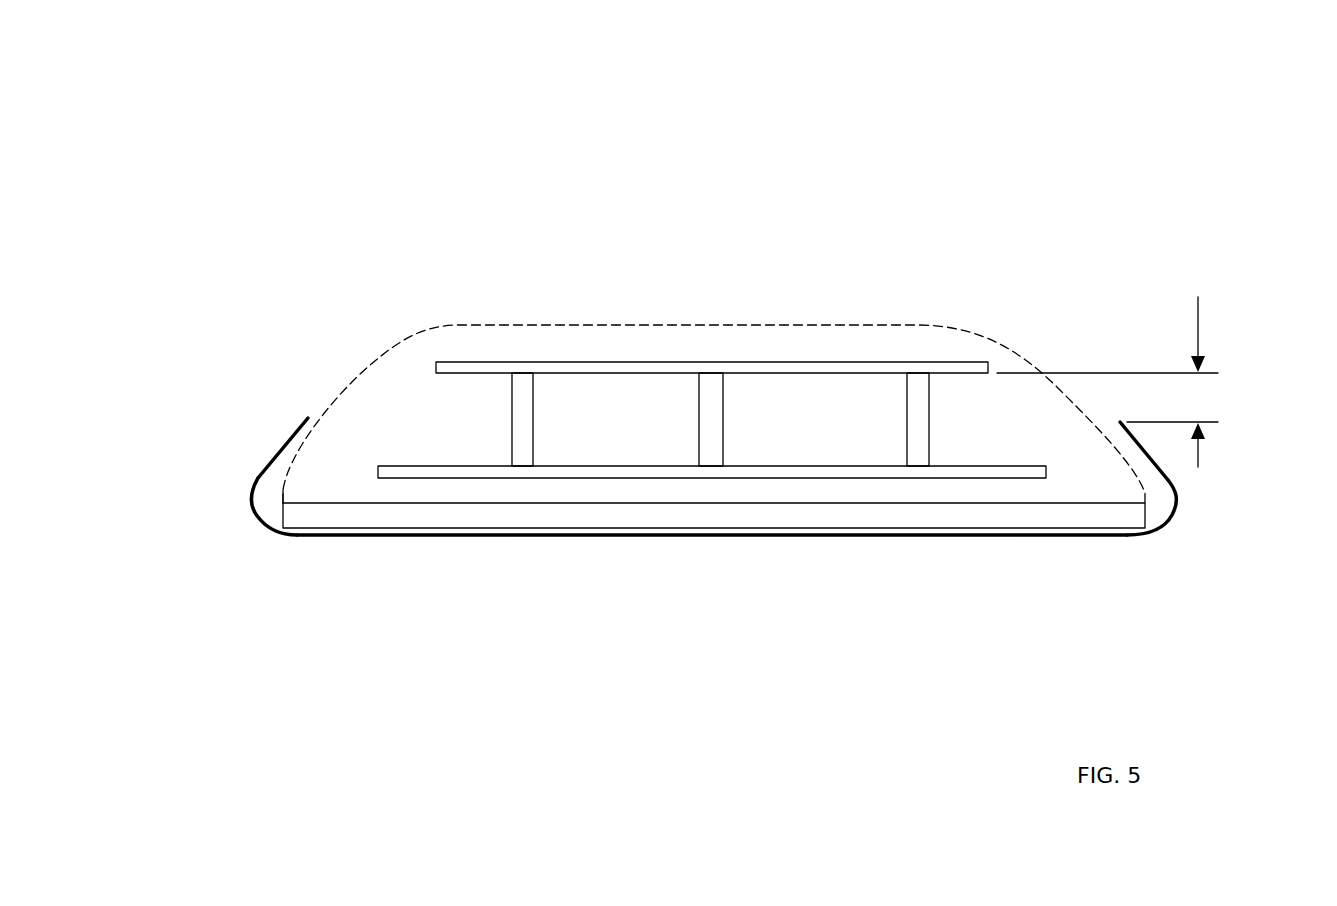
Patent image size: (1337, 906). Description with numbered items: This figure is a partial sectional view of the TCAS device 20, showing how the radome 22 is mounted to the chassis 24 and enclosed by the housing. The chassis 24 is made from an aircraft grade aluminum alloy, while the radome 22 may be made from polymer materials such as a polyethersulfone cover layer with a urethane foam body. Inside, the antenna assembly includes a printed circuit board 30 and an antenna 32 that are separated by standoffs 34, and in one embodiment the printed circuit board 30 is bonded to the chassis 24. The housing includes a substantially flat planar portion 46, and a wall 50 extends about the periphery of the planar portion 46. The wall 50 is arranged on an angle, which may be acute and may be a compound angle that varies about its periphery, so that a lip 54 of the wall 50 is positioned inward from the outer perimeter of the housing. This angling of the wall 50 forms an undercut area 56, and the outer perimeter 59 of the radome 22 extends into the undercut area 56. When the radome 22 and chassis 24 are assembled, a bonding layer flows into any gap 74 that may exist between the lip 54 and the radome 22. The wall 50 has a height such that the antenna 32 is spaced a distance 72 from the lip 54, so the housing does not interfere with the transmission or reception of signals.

The TCAS device 20 is at (547, 158).
The radome 22 is at (820, 323).
The chassis 24 is at (437, 513).
The printed circuit board 30 is at (885, 478).
The antenna 32 is at (905, 362).
The standoffs 34 is at (724, 422).
The planar portion 46 is at (573, 540).
The wall 50 is at (253, 488).
The lip 54 is at (308, 418).
The undercut area 56 is at (263, 504).
The outer perimeter 59 is at (1146, 487).
The distance 72 is at (1198, 320).
The gap 74 is at (316, 392).